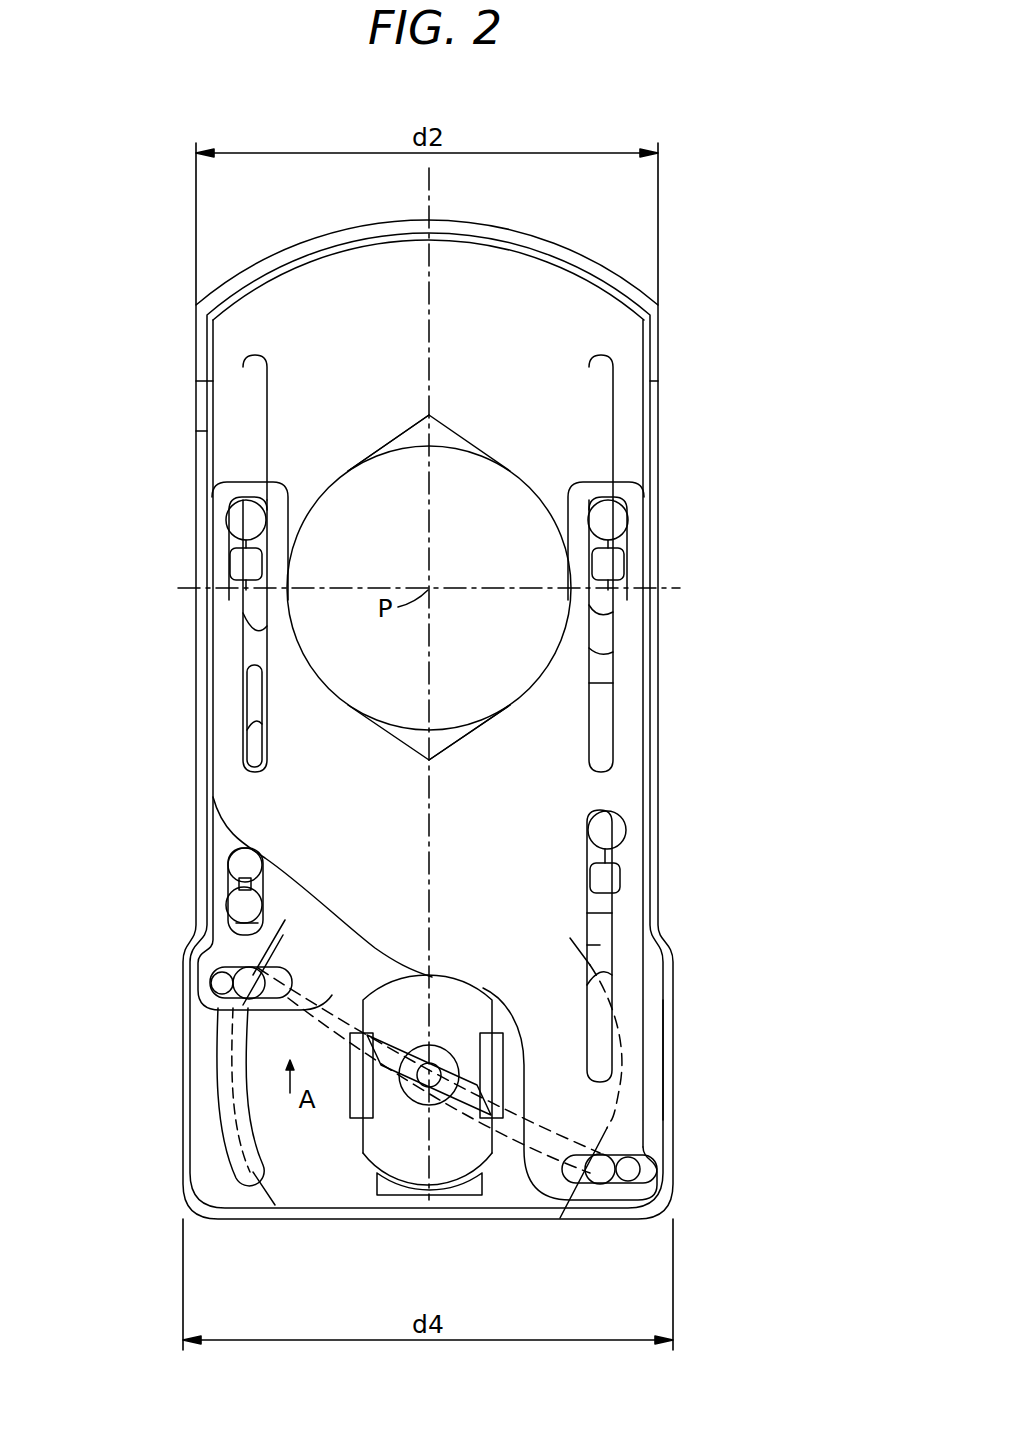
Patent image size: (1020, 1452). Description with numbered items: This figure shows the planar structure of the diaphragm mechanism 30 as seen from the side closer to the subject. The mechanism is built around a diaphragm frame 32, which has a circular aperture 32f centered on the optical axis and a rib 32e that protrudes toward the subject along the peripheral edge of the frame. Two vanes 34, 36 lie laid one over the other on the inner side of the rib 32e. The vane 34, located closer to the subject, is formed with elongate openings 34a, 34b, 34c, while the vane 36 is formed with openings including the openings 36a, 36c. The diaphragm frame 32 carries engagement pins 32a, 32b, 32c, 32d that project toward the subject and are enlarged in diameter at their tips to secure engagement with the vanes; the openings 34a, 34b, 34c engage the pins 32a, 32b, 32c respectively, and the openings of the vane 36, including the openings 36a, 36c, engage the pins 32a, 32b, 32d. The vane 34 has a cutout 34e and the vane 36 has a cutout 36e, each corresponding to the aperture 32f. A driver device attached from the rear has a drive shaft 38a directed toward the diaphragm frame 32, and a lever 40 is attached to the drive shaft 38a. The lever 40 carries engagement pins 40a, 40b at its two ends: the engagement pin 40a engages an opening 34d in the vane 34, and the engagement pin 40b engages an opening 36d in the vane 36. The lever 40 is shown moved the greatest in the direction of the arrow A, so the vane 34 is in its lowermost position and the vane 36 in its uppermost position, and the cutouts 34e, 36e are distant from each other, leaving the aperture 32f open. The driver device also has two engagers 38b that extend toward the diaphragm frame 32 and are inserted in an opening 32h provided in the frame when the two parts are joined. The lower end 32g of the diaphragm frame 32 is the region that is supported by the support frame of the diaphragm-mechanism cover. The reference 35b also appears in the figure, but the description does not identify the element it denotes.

The diaphragm mechanism 30 is at (553, 246).
The diaphragm frame 32 is at (347, 1180).
The engagement pin 32a is at (612, 566).
The engagement pin 32b is at (246, 565).
The engagement pin 32c is at (615, 870).
The engagement pin 32d is at (243, 856).
The rib 32e is at (663, 1085).
The aperture 32f is at (478, 448).
The lower end 32g is at (222, 1220).
The opening 32h is at (504, 1130).
The vane 34 is at (245, 791).
The elongate opening 34a is at (600, 690).
The elongate opening 34b is at (265, 641).
The elongate opening 34c is at (612, 913).
The opening 34d is at (660, 1165).
The cutout 34e is at (462, 736).
The slot end 35b is at (265, 408).
The vane 36 is at (310, 295).
The opening 36a is at (592, 402).
The opening 36c is at (240, 903).
The opening 36d is at (213, 985).
The cutout 36e is at (392, 443).
The drive shaft 38a is at (413, 1085).
The engager 38b is at (357, 1108).
The lever 40 is at (448, 1100).
The engagement pin 40a is at (615, 1173).
The engagement pin 40b is at (250, 990).